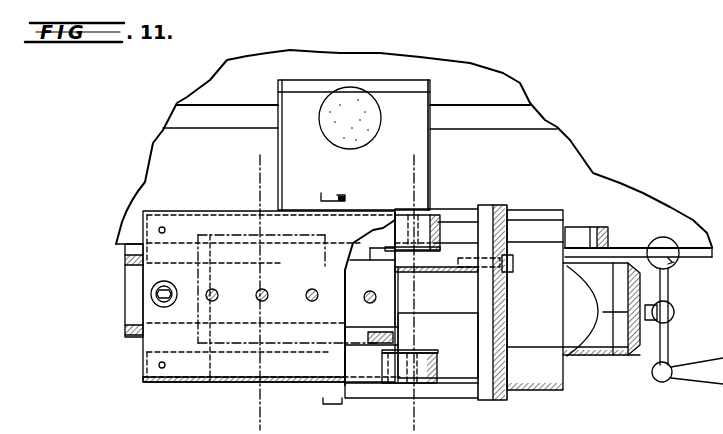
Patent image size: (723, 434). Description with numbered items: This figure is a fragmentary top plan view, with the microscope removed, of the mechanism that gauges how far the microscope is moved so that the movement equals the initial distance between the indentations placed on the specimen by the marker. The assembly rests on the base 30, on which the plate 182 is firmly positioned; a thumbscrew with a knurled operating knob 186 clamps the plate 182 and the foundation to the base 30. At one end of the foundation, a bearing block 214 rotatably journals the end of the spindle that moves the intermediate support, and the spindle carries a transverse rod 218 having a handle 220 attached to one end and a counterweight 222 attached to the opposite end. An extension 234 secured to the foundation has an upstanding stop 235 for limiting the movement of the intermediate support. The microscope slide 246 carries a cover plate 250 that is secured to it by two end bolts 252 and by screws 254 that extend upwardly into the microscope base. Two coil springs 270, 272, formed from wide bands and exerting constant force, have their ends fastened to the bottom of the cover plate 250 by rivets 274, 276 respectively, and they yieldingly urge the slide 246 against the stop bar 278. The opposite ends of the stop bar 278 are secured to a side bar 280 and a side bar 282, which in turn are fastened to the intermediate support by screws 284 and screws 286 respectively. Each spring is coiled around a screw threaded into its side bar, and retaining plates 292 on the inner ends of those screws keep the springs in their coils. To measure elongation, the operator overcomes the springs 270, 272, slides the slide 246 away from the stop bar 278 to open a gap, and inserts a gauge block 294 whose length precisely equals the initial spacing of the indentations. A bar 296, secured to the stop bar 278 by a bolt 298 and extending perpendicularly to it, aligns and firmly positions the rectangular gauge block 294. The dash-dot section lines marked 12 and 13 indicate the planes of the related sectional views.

The section line 12- 12 is at (397, 177).
The section line 13- 13 is at (278, 177).
The base 30 is at (540, 148).
The plate 182 is at (410, 110).
The knurled operating knob 186 is at (356, 94).
The bearing block 214 is at (592, 347).
The transverse rod 218 is at (669, 330).
The handle 220 is at (717, 373).
The counterweight 222 is at (671, 266).
The extension 234 is at (573, 237).
The upstanding stop 235 is at (603, 235).
The microscope slide 246 is at (366, 306).
The cover plate 250 is at (154, 270).
The end bolts 252 is at (157, 293).
The screws 254 is at (216, 293).
The coil spring 270 is at (432, 239).
The coil spring 272 is at (435, 359).
The rivet 274 is at (163, 226).
The rivet 276 is at (159, 365).
The stop bar 278 is at (485, 208).
The side bar 280 is at (363, 208).
The side bar 282 is at (373, 390).
The screws 284 is at (325, 198).
The screws 286 is at (323, 402).
The retaining plates 292 is at (413, 266).
The gauge block 294 is at (452, 307).
The bar 296 is at (505, 255).
The bolt 298 is at (512, 268).